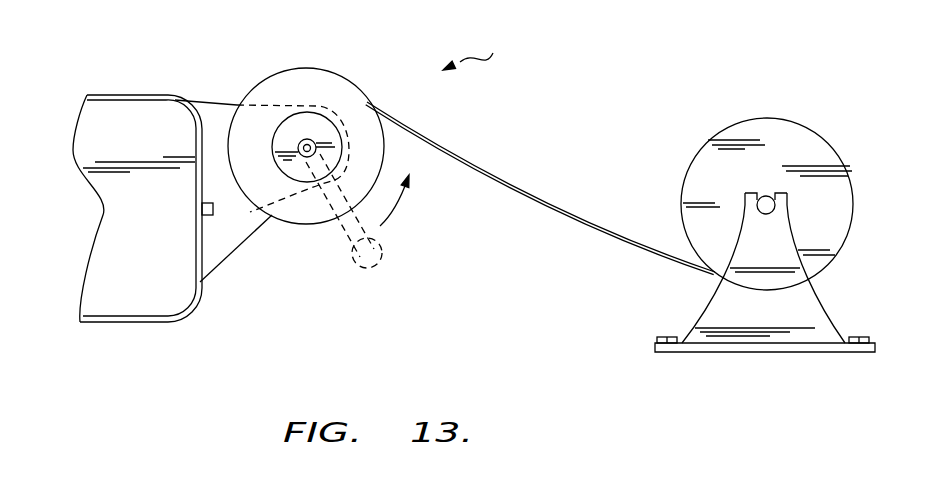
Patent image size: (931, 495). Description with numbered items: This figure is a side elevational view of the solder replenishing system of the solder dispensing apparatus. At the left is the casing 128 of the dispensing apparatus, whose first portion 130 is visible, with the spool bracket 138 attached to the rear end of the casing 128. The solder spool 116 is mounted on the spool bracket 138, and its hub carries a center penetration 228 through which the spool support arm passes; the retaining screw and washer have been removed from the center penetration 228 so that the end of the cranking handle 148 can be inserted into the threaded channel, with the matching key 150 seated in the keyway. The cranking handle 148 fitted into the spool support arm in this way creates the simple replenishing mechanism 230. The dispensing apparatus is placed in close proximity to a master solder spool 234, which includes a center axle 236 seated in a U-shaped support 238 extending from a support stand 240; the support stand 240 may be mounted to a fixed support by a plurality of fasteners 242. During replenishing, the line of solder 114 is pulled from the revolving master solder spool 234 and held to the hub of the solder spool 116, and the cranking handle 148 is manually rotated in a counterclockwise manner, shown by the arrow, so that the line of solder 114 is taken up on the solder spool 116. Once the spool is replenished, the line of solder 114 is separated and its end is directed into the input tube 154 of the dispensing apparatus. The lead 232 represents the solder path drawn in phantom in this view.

The line of solder 114 is at (537, 200).
The solder spool 116 is at (287, 83).
The casing 128 is at (127, 117).
The first portion 130 is at (125, 297).
The spool bracket 138 is at (215, 117).
The cranking handle 148 is at (355, 232).
The matching key 150 is at (311, 141).
The input tube 154 is at (207, 216).
The center penetration 228 is at (309, 157).
The replenishing mechanism 230 is at (480, 47).
The cable lead 232 is at (322, 104).
The master solder spool 234 is at (735, 132).
The center axle 236 is at (766, 198).
The U-shaped support 238 is at (757, 205).
The support stand 240 is at (723, 305).
The fasteners 242 is at (655, 341).